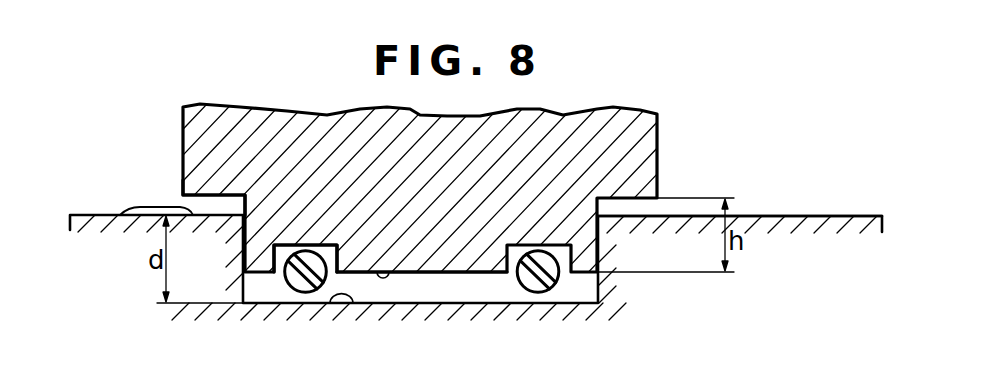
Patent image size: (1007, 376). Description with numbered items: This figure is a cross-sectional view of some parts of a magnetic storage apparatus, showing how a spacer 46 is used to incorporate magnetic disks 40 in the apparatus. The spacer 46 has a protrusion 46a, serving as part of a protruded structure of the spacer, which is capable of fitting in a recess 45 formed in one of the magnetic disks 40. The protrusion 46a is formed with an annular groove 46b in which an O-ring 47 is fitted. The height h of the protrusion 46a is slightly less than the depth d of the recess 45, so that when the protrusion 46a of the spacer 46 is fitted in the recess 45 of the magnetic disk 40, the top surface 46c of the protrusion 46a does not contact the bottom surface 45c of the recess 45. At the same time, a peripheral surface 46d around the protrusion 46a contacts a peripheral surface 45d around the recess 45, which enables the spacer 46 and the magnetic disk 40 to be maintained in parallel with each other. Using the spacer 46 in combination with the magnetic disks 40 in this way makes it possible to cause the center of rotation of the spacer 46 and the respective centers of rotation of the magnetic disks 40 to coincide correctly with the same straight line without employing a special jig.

The magnetic disk 40 is at (800, 215).
The recess 45 is at (588, 303).
The bottom surface of the recess 45c is at (333, 303).
The peripheral surface around the recess 45d is at (122, 215).
The spacer 46 is at (660, 162).
The protrusion 46a is at (467, 271).
The annular groove 46b is at (290, 244).
The top surface of the protrusion 46c is at (382, 271).
The peripheral surface around the protrusion 46d is at (183, 195).
The O-ring 47 is at (520, 278).